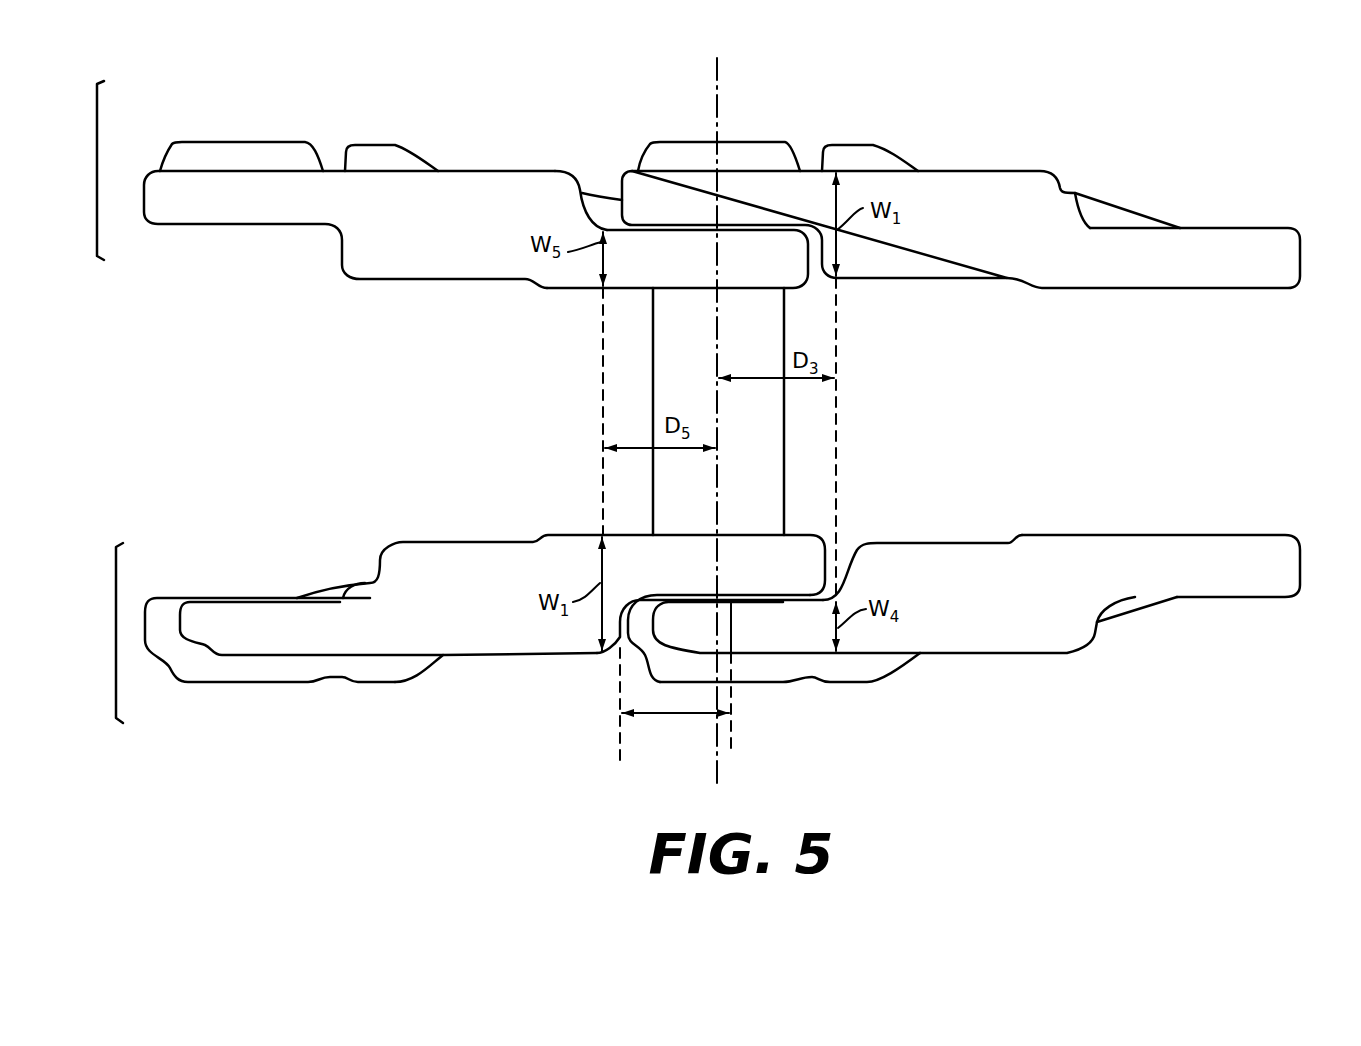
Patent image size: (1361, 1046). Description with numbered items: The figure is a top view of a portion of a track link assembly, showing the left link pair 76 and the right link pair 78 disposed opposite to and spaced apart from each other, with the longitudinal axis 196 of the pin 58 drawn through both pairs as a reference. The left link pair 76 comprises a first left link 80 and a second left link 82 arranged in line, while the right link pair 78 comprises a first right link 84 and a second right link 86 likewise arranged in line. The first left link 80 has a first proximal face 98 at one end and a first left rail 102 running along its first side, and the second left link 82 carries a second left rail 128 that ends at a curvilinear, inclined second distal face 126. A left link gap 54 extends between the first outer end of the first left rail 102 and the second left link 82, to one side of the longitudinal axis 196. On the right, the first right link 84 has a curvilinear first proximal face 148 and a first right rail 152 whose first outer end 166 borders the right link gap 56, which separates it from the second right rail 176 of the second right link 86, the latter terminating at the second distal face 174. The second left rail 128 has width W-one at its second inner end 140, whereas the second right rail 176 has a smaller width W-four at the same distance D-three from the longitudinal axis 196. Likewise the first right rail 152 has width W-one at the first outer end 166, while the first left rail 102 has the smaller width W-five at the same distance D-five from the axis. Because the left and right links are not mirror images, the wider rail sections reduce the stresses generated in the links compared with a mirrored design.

The left link pair 76 is at (96, 138).
The first proximal face 98 is at (146, 190).
The first left link 80 is at (391, 171).
The first left rail 102 is at (500, 200).
The left link gap 54 is at (592, 190).
The longitudinal axis 196 is at (718, 80).
The second left link 82 is at (895, 180).
The second left rail 128 is at (975, 232).
The second distal face 126 is at (1306, 256).
The second inner end 140 is at (806, 258).
The pin 58 is at (672, 355).
The right link pair 78 is at (113, 602).
The first proximal face 148 is at (141, 612).
The first right rail 152 is at (503, 615).
The first right link 84 is at (460, 660).
The first outer end 166 is at (612, 650).
The right link gap 56 is at (686, 717).
The second right link 86 is at (947, 655).
The second right rail 176 is at (1070, 607).
The second distal face 174 is at (1300, 562).